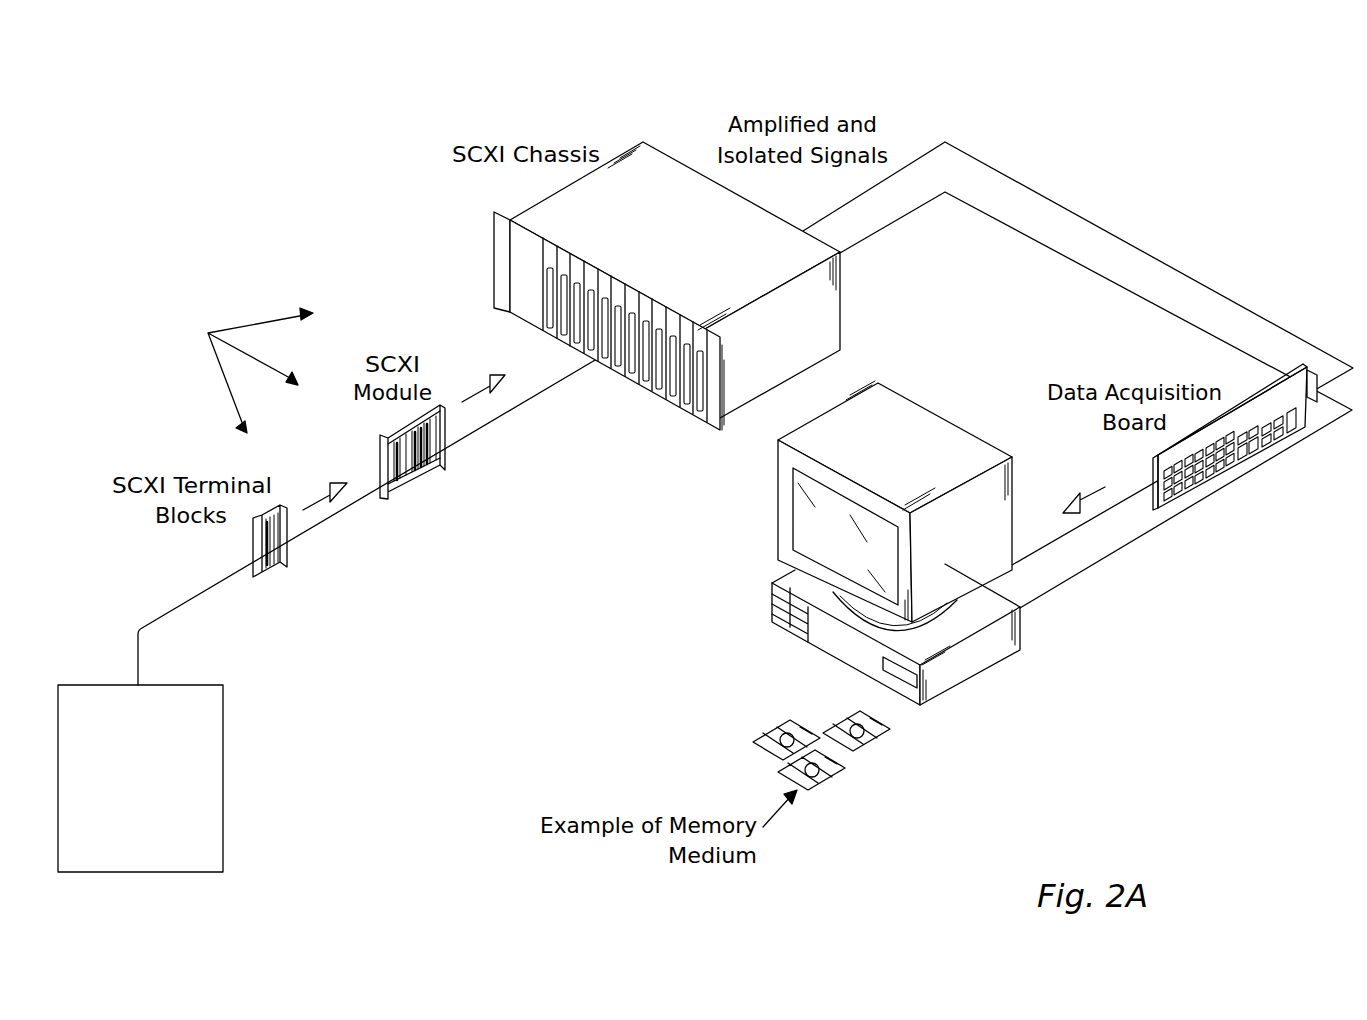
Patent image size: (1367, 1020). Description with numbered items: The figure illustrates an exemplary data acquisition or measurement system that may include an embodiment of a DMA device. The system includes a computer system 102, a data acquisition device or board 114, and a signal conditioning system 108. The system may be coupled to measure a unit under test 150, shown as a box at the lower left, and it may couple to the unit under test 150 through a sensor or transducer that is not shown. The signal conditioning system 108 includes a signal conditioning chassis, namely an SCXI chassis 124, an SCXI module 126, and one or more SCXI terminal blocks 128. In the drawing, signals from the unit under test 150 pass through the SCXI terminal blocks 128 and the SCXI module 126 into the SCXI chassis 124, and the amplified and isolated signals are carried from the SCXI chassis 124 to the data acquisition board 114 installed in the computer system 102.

The computer system 102 is at (907, 402).
The signal conditioning system 108 is at (237, 370).
The data acquisition device or board 114 is at (1270, 448).
The SCXI chassis 124 is at (841, 298).
The SCXI module 126 is at (413, 487).
The SCXI terminal blocks 128 is at (270, 573).
The unit under test 150 is at (162, 859).